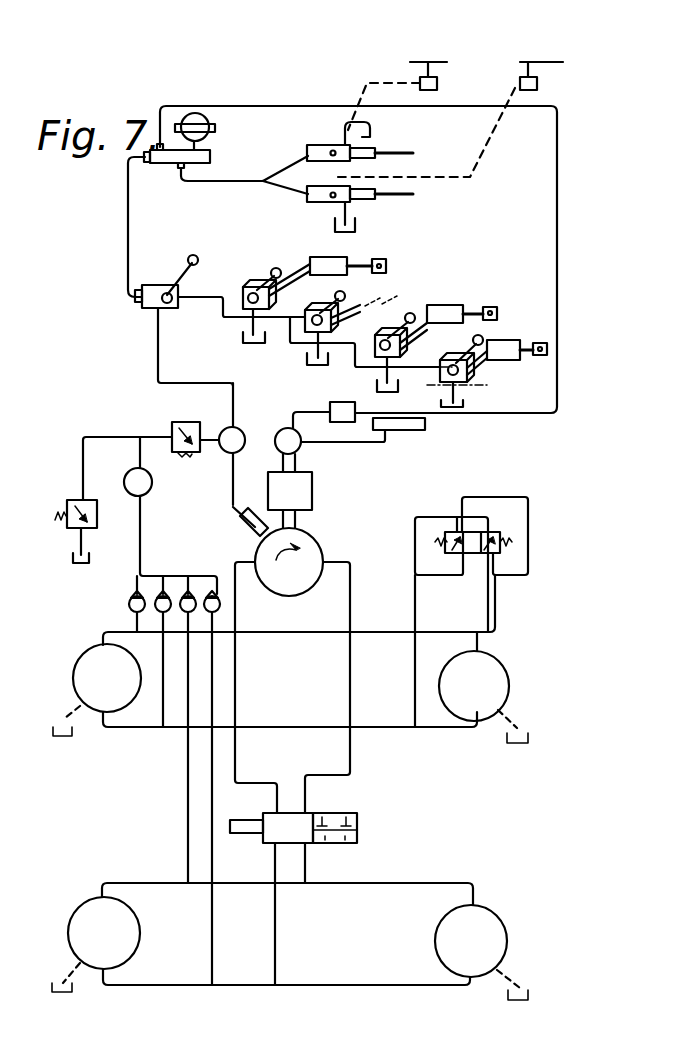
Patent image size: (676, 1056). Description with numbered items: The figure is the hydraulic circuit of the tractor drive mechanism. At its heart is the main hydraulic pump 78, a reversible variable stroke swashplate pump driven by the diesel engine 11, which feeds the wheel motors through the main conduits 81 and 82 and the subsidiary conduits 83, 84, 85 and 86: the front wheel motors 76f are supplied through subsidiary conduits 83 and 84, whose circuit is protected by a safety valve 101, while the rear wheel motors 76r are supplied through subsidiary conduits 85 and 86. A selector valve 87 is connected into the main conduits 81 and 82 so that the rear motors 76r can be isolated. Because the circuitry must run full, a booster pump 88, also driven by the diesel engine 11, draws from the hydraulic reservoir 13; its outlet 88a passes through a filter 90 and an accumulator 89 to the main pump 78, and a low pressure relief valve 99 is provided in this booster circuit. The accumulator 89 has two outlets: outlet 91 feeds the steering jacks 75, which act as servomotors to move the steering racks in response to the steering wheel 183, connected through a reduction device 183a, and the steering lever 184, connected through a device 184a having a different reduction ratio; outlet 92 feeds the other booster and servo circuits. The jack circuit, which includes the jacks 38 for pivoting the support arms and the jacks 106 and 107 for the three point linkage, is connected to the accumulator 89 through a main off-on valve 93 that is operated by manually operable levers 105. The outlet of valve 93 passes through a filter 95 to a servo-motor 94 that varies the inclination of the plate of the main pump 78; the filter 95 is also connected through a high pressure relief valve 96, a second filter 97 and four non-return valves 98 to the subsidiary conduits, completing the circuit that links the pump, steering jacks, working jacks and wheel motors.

The diesel engine 11 is at (300, 490).
The hydraulic reservoir 13 is at (425, 423).
The jacks 38 is at (340, 258).
The steering jacks 75 is at (333, 192).
The front wheel hydraulic motors 76f is at (92, 671).
The rear wheel hydraulic motors 76r is at (93, 920).
The main hydraulic pump 78 is at (300, 573).
The main conduit 81 is at (230, 583).
The main conduit 82 is at (352, 607).
The subsidiary conduit 83 is at (138, 728).
The subsidiary conduit 84 is at (383, 634).
The subsidiary conduit 85 is at (160, 880).
The subsidiary conduit 86 is at (382, 985).
The selector valve 87 is at (285, 820).
The booster pump 88 is at (283, 428).
The booster pump outlet 88a is at (303, 417).
The accumulator 89 is at (169, 164).
The filter 90 is at (340, 404).
The accumulator outlet 91 is at (236, 175).
The accumulator outlet 92 is at (126, 229).
The main off-on valve 93 is at (143, 303).
The servo-motor 94 is at (297, 525).
The filter 95 is at (226, 451).
The high pressure relief valve 96 is at (183, 423).
The second filter 97 is at (132, 477).
The non-return valves 98 is at (213, 597).
The low pressure relief valve 99 is at (67, 522).
The safety valve 101 is at (473, 543).
The manually operable levers 105 is at (272, 270).
The jack 106 is at (442, 305).
The jack 107 is at (504, 340).
The steering wheel 183 is at (447, 62).
The reduction device 183a is at (437, 83).
The steering lever 184 is at (563, 62).
The reduction device 184a is at (538, 84).